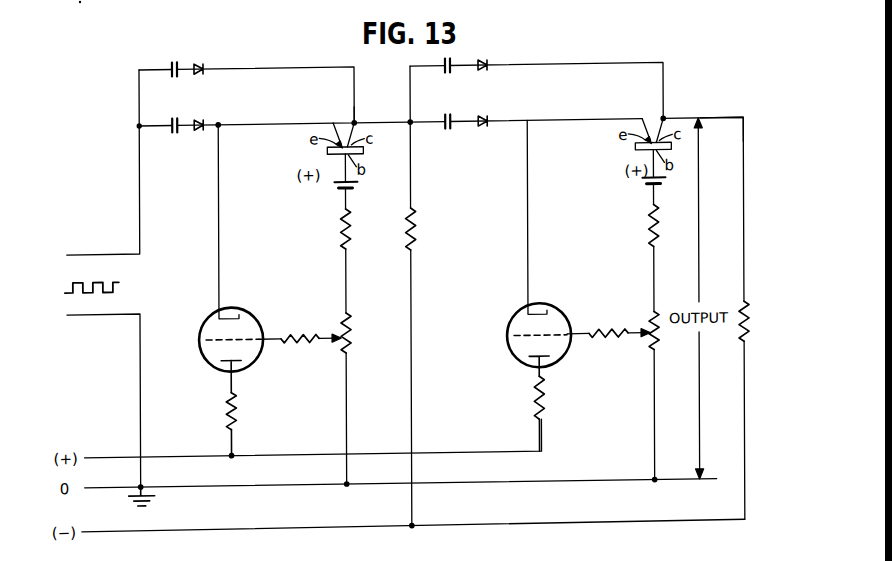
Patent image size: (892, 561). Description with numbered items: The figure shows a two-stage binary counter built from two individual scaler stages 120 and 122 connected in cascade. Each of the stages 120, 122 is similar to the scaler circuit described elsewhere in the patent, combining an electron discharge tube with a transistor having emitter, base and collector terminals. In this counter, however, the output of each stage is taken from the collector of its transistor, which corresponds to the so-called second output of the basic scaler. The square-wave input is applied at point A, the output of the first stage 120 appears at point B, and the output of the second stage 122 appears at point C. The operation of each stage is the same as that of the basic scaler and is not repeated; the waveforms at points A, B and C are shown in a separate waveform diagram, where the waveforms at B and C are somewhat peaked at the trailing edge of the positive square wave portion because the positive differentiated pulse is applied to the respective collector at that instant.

The first stage 120 is at (284, 307).
The second stage 122 is at (594, 302).
The input point A is at (102, 279).
The point B is at (356, 110).
The point C is at (733, 124).